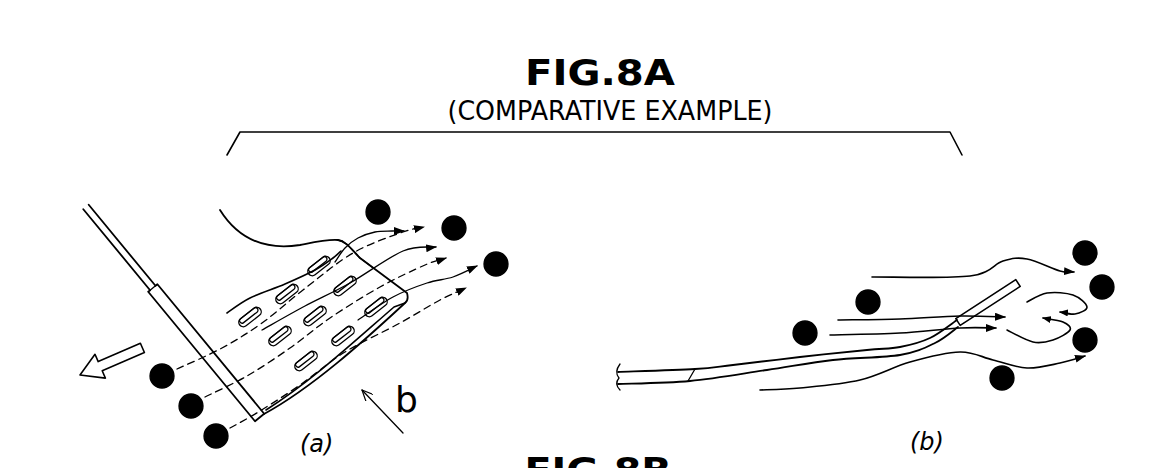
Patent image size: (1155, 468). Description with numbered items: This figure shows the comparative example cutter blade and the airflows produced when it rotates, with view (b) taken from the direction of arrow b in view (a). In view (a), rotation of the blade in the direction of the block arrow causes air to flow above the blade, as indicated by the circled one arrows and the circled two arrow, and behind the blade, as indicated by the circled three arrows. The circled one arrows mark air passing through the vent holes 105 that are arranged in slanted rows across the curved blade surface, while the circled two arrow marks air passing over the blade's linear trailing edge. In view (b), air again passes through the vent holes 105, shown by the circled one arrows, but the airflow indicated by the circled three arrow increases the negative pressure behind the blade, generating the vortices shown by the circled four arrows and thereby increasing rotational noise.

The vent holes 105 is at (316, 261).